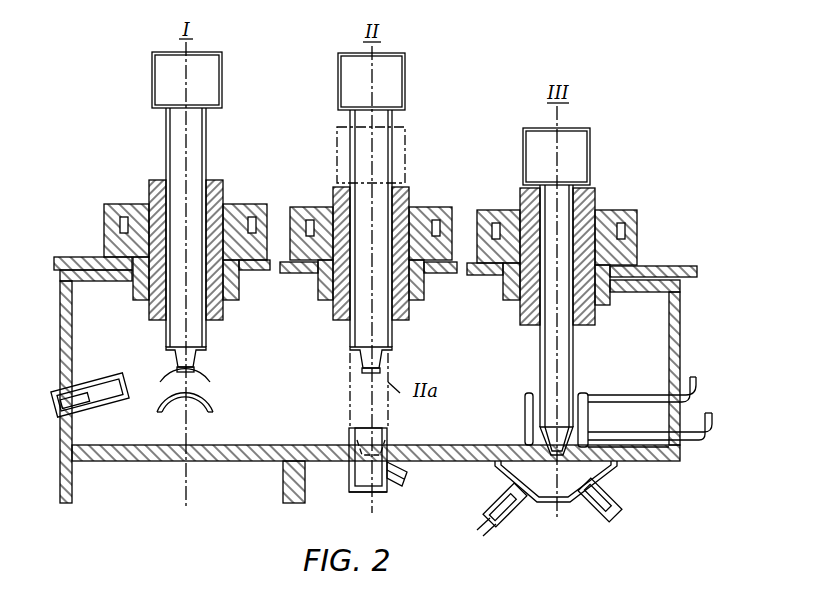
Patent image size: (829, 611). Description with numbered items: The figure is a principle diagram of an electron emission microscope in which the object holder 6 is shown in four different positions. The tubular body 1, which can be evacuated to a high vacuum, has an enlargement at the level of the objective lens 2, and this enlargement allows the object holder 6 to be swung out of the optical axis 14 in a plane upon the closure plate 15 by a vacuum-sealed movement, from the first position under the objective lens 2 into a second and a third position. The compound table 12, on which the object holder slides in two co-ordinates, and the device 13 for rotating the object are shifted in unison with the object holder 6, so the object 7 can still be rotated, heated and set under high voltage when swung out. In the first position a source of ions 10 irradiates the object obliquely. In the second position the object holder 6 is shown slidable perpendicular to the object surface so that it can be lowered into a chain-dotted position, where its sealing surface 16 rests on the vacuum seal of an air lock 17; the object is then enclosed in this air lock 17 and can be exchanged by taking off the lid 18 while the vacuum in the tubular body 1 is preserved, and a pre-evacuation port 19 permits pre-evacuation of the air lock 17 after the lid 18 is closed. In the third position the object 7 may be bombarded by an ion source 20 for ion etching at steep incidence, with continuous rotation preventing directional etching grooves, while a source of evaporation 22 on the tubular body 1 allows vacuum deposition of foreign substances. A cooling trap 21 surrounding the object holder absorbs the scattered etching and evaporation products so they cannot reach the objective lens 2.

The tubular body 1 is at (72, 480).
The objective lens 2 is at (160, 402).
The object holder 6 is at (166, 125).
The object 7 is at (175, 363).
The source of ions 10 is at (78, 382).
The compound table 12 is at (625, 213).
The device for rotating the object 13 is at (152, 72).
The optical axis 14 is at (178, 492).
The closure plate 15 is at (68, 288).
The sealing surface 16 is at (168, 350).
The air lock 17 is at (349, 474).
The lid 18 is at (356, 492).
The pre-evacuation port 19 is at (394, 484).
The ion source 20 is at (598, 512).
The cooling trap 21 is at (582, 415).
The source of evaporation 22 is at (505, 516).